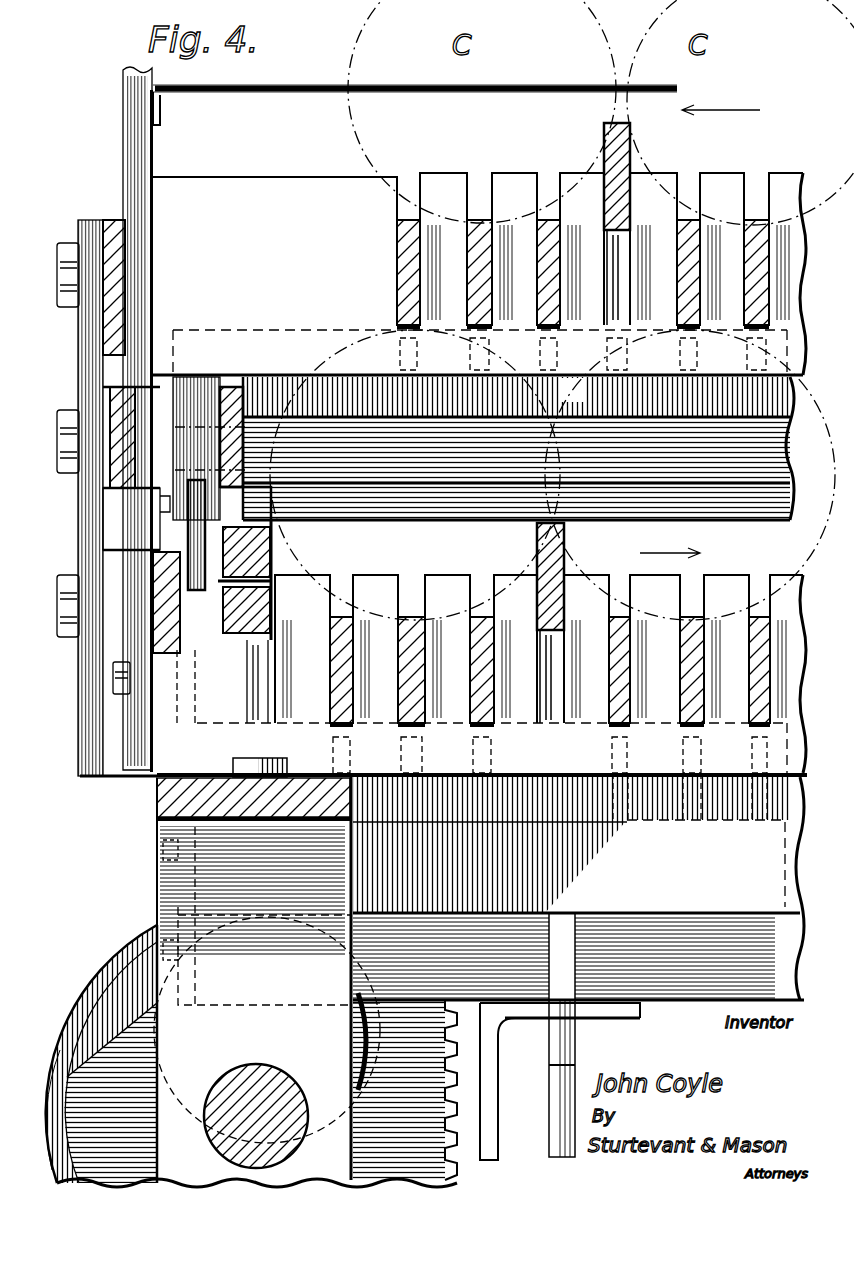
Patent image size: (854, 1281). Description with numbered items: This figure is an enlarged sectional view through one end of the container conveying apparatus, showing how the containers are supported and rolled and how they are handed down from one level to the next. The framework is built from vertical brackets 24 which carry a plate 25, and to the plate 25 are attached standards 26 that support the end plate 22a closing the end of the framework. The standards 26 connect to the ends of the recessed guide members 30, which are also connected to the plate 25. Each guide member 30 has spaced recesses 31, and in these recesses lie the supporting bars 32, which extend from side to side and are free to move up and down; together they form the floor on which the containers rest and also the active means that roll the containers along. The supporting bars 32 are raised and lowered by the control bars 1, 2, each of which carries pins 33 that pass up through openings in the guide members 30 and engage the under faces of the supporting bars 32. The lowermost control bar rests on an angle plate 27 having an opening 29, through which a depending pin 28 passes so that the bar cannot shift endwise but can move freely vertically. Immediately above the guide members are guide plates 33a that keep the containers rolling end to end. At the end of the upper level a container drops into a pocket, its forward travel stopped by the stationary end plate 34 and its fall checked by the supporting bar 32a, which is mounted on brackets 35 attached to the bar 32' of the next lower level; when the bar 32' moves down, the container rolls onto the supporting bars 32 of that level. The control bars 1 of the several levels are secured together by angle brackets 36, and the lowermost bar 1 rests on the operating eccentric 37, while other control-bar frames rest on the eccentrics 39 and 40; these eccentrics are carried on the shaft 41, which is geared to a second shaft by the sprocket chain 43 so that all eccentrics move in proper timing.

The control bar 1 is at (523, 688).
The control bar 2 is at (820, 480).
The end plate 22a is at (112, 288).
The vertical bracket 24 is at (225, 877).
The plate 25 is at (88, 332).
The standard 26 is at (145, 322).
The angle plate 27 is at (490, 1068).
The depending pin 28 is at (572, 1060).
The opening 29 is at (632, 1020).
The recessed guide member 30 is at (479, 475).
The recess 31 is at (600, 238).
The supporting bar 32 is at (550, 429).
The supporting bar 32a is at (255, 365).
The supporting bar 32' is at (278, 580).
The pin 33 is at (655, 358).
The guide plate 33a is at (625, 530).
The stationary end plate 34 is at (125, 478).
The bracket 35 is at (212, 405).
The angle bracket 36 is at (160, 530).
The operating eccentric 37 is at (360, 1030).
The eccentric 39 is at (168, 1182).
The eccentric 40 is at (120, 1050).
The shaft 41 is at (148, 948).
The sprocket chain 43 is at (88, 1005).